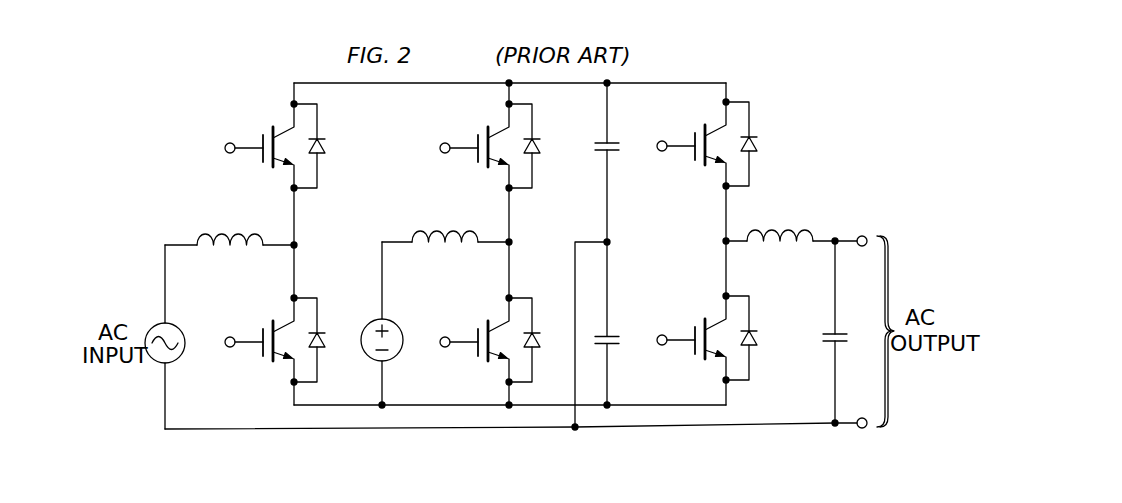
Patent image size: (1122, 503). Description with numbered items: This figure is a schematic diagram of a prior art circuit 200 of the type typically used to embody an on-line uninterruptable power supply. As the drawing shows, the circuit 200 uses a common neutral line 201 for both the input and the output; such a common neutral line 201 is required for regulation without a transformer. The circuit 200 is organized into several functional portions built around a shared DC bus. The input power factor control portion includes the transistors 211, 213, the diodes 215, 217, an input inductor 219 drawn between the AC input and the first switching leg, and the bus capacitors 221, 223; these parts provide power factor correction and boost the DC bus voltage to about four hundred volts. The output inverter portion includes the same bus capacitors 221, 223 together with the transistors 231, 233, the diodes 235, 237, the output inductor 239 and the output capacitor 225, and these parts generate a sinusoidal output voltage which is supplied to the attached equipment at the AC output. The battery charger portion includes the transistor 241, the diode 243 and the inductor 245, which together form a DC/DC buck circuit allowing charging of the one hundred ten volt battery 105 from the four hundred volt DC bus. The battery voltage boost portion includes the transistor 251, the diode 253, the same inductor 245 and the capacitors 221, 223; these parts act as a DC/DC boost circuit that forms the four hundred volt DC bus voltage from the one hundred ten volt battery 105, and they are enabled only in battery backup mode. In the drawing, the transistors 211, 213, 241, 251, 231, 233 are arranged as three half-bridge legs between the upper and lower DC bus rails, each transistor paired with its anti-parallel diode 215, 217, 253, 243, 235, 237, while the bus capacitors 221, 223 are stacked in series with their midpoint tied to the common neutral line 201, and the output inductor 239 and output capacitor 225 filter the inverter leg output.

The circuit 200 is at (773, 59).
The common neutral line 201 is at (652, 426).
The battery 105 is at (398, 323).
The transistor 211 is at (258, 132).
The transistor 213 is at (260, 358).
The diode 215 is at (326, 150).
The diode 217 is at (326, 345).
The input inductor 219 is at (218, 225).
The bus capacitor 221 is at (584, 144).
The bus capacitor 223 is at (618, 338).
The output capacitor 225 is at (821, 334).
The transistor 231 is at (692, 128).
The transistor 233 is at (694, 352).
The diode 235 is at (783, 135).
The diode 237 is at (757, 340).
The output inductor 239 is at (793, 222).
The transistor 241 is at (475, 132).
The diode 243 is at (539, 336).
The inductor 245 is at (433, 223).
The transistor 251 is at (478, 356).
The diode 253 is at (537, 152).